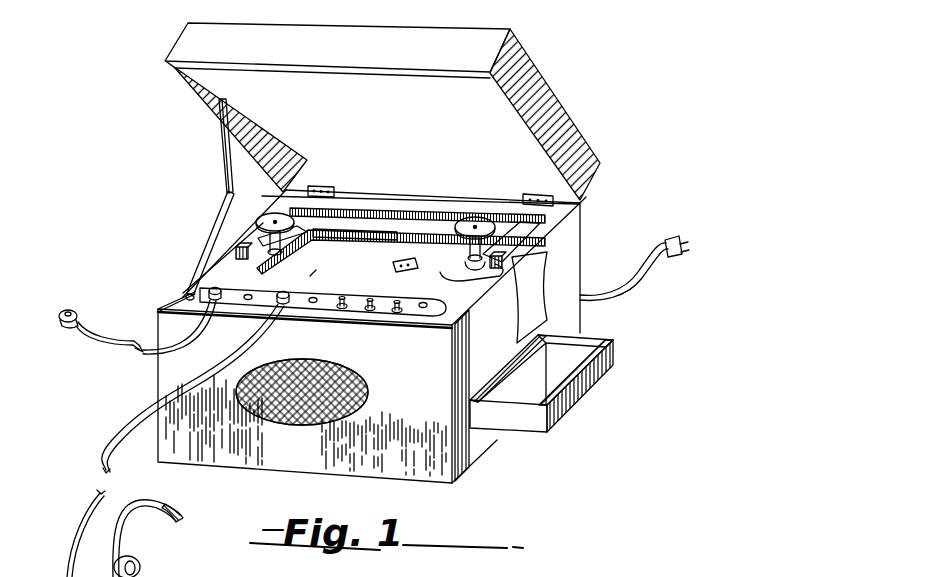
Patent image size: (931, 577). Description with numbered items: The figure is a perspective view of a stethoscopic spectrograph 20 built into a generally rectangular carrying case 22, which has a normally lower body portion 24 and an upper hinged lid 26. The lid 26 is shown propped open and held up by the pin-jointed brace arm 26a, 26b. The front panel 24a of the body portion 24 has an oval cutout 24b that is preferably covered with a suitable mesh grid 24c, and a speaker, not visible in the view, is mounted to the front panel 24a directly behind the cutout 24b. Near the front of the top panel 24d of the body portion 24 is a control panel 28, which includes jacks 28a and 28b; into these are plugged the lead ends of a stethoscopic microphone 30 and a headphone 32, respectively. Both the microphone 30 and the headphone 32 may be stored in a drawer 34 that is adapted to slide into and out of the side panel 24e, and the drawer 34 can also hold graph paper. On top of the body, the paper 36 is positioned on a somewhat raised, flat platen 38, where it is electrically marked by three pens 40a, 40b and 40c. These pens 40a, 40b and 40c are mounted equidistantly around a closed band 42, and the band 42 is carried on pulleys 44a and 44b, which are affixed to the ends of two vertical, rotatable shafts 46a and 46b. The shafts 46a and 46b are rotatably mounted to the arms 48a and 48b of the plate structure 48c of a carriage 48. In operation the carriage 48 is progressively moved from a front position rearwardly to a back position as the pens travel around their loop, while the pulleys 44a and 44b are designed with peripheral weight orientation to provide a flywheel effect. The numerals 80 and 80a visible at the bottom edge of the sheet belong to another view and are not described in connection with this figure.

The spectrograph 20 is at (155, 180).
The carrying case 22 is at (587, 200).
The body portion 24 is at (321, 347).
The front panel 24a is at (212, 452).
The oval cutout 24b is at (350, 376).
The mesh grid 24c is at (340, 402).
The top panel 24d is at (167, 300).
The side panel 24e is at (472, 452).
The hinged lid 26 is at (180, 33).
The brace arm 26a is at (222, 137).
The brace arm 26b is at (208, 236).
The control panel 28 is at (325, 312).
The jack 28a is at (211, 305).
The jack 28b is at (278, 312).
The stethoscopic microphone 30 is at (58, 325).
The headphone 32 is at (145, 569).
The drawer 34 is at (612, 370).
The paper 36 is at (543, 277).
The platen 38 is at (397, 270).
The pen 40a is at (298, 196).
The pen 40b is at (490, 206).
The pen 40c is at (352, 252).
The closed band 42 is at (330, 235).
The pulley 44a is at (267, 213).
The pulley 44b is at (497, 212).
The shaft 46a is at (262, 245).
The shaft 46b is at (510, 238).
The carriage 48 is at (540, 212).
The arm 48a is at (259, 255).
The arm 48b is at (474, 266).
The plate structure 48c is at (428, 200).
The cartridge (FIG. 2) 80 is at (520, 575).
The cartridge portion (FIG. 2) 80a is at (582, 576).